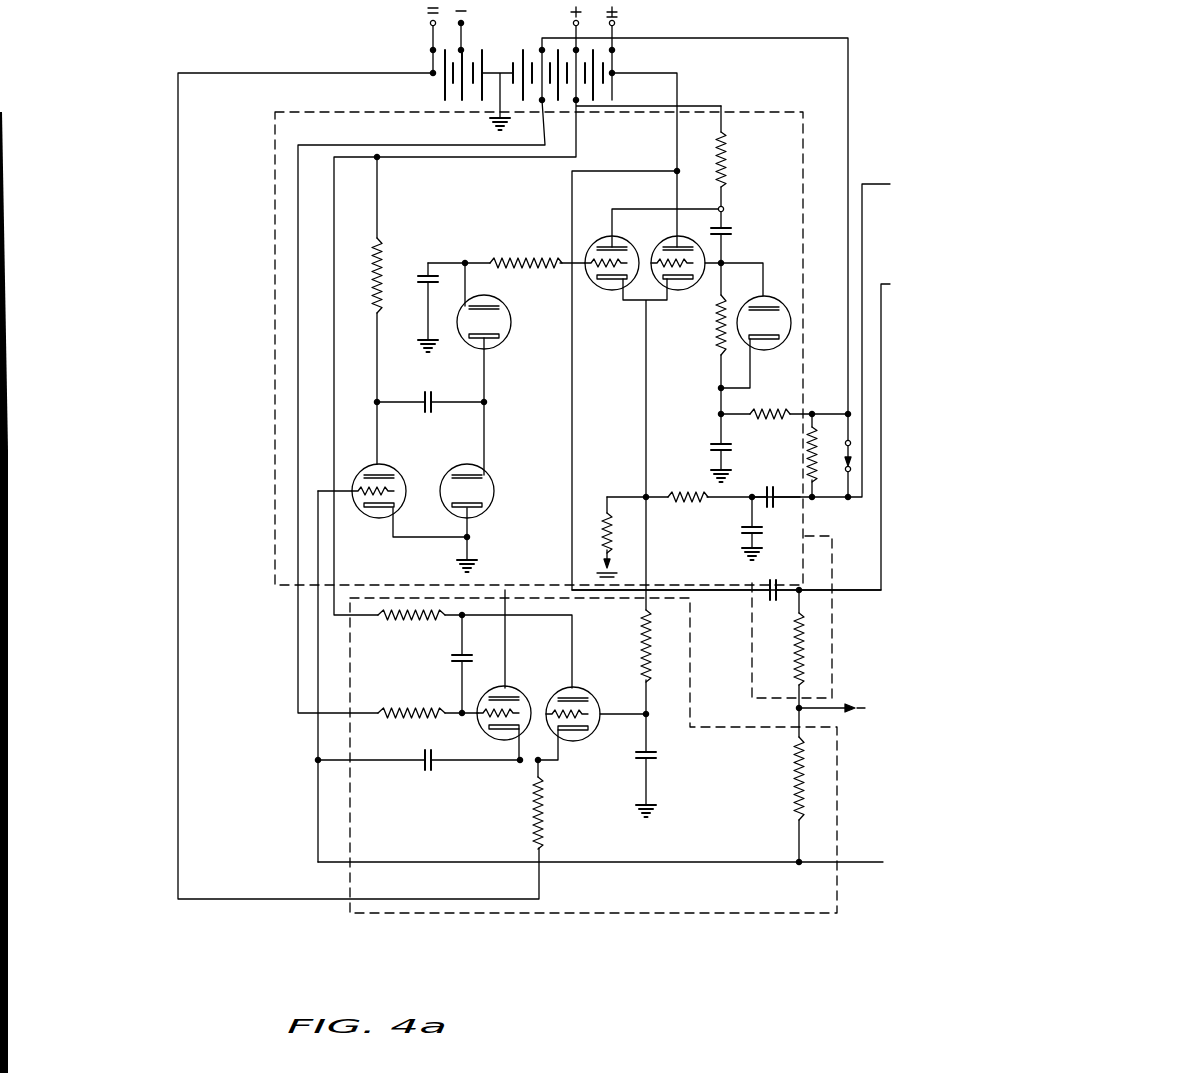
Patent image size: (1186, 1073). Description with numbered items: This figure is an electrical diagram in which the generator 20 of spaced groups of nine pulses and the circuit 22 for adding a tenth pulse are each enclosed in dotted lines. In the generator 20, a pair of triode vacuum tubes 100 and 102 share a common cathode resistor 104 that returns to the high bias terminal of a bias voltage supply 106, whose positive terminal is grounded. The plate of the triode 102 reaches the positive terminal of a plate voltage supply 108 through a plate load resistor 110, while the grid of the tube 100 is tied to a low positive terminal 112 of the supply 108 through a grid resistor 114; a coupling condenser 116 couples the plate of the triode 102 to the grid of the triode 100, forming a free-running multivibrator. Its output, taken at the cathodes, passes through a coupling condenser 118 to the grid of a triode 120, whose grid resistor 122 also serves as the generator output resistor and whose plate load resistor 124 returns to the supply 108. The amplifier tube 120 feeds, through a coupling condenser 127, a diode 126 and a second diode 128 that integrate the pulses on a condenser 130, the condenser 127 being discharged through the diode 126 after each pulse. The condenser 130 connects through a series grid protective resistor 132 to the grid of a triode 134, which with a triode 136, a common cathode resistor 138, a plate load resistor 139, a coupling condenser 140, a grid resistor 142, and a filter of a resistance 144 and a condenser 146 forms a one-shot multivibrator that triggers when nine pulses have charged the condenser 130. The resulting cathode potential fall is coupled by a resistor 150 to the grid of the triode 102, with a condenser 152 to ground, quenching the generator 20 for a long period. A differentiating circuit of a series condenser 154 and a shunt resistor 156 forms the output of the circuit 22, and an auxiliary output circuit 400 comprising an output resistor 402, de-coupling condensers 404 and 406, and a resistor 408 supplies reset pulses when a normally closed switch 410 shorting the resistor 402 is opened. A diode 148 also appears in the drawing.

The generator of spaced groups of nine pulses 20 is at (578, 913).
The circuit for adding a tenth pulse 22 is at (275, 422).
The triode vacuum tube 100 is at (512, 690).
The triode vacuum tube 102 is at (588, 696).
The common cathode resistor 104 is at (546, 822).
The bias voltage supply 106 is at (458, 47).
The plate voltage supply 108 is at (540, 48).
The plate load resistor 110 is at (420, 622).
The low positive terminal 112 is at (548, 105).
The grid resistor 114 is at (397, 716).
The coupling condenser 116 is at (451, 658).
The coupling condenser 118 is at (432, 766).
The triode 120 is at (395, 470).
The grid resistor 122 is at (796, 780).
The plate load resistor 124 is at (382, 274).
The diode 126 is at (492, 512).
The coupling condenser 127 is at (440, 388).
The second diode 128 is at (508, 343).
The condenser 130 is at (422, 290).
The series grid protective resistor 132 is at (530, 248).
The triode 134 is at (622, 244).
The triode 136 is at (683, 243).
The common cathode resistor 138 is at (596, 506).
The plate load resistor 139 is at (726, 156).
The coupling condenser 140 is at (726, 233).
The grid resistor 142 is at (715, 336).
The resistance 144 is at (772, 410).
The condenser 146 is at (712, 444).
The diode tube 148 is at (770, 295).
The resistor 150 is at (640, 632).
The condenser 152 is at (651, 761).
The series condenser 154 is at (780, 586).
The shunt resistor 156 is at (796, 648).
The auxiliary output circuit 400 is at (748, 502).
The output resistor 402 is at (806, 450).
The condenser 404 is at (774, 500).
The condenser 406 is at (764, 535).
The resistor 408 is at (680, 500).
The switch 410 is at (844, 446).